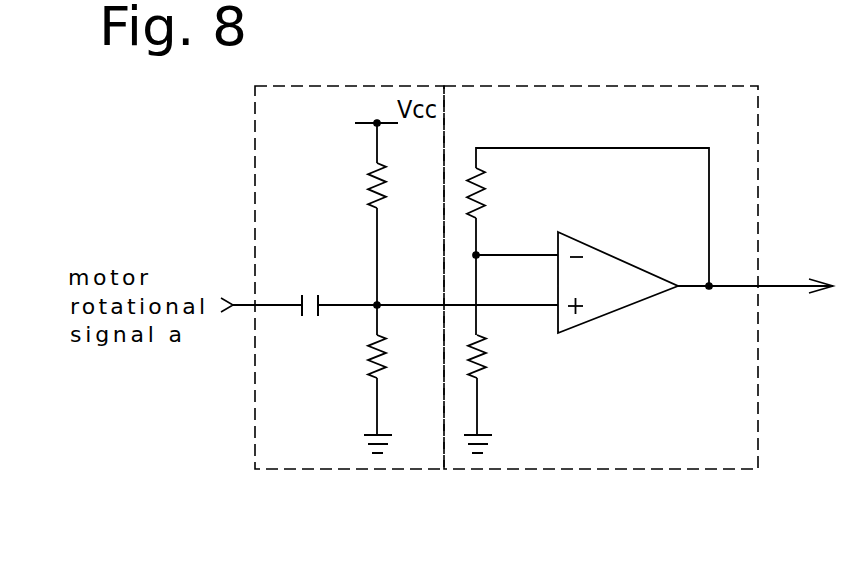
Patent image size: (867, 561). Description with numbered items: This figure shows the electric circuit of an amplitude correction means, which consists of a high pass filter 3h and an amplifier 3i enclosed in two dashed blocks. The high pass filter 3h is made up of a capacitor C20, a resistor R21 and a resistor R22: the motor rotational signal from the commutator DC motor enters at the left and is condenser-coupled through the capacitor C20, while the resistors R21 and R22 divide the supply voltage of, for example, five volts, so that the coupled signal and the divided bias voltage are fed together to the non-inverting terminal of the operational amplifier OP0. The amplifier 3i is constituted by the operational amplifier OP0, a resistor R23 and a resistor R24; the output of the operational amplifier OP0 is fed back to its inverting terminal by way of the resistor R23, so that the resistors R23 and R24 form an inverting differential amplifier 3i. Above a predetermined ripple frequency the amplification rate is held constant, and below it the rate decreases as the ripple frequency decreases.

The high pass filter 3h is at (377, 86).
The amplifier 3i is at (588, 86).
The capacitor C20 is at (311, 290).
The resistor R21 is at (353, 185).
The resistor R22 is at (349, 356).
The resistor R23 is at (502, 193).
The resistor R24 is at (499, 356).
The operational amplifier OP0 is at (664, 229).